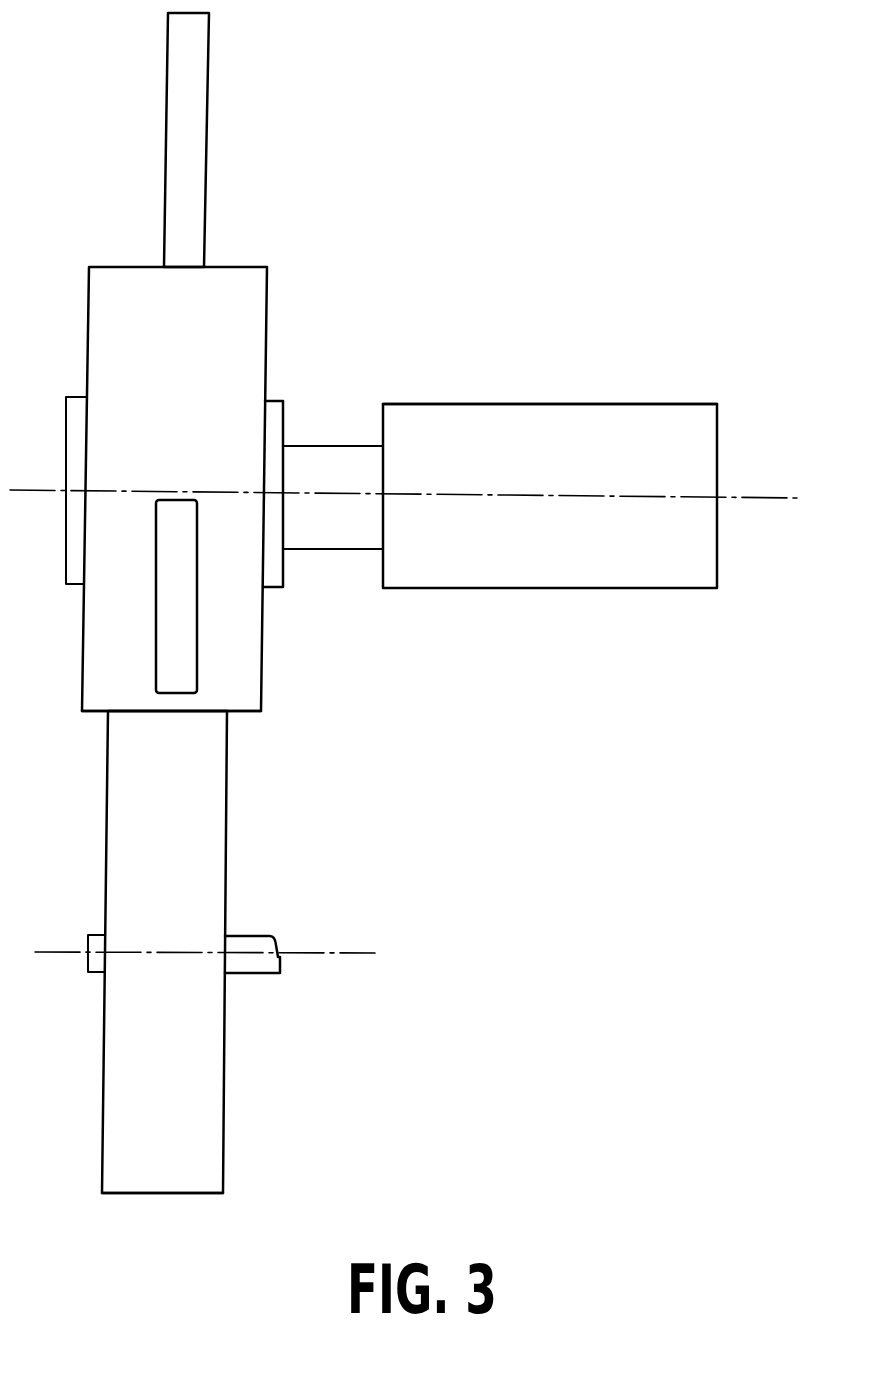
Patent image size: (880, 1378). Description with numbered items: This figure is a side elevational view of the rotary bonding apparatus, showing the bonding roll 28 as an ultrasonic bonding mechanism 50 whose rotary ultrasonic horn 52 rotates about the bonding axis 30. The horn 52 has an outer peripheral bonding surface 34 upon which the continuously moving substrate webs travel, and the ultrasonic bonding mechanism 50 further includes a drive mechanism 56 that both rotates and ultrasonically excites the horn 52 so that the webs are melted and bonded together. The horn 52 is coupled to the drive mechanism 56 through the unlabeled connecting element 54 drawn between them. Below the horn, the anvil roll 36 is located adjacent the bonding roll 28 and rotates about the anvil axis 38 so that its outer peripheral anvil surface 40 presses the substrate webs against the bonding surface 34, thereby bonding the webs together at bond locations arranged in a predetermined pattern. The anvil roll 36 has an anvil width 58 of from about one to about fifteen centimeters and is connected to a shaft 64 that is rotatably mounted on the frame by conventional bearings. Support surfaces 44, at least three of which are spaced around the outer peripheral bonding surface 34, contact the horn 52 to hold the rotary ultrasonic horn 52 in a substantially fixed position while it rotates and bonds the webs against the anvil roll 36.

The bonding roll 28 is at (243, 330).
The bonding axis 30 is at (750, 497).
The outer peripheral bonding surface 34 is at (250, 714).
The anvil roll 36 is at (195, 1142).
The anvil axis 38 is at (350, 950).
The anvil surface 40 is at (198, 1193).
The support surfaces 44 is at (192, 160).
The ultrasonic bonding mechanism 50 is at (580, 588).
The rotary ultrasonic horn 52 is at (210, 388).
The shaft 54 is at (335, 549).
The drive mechanism 56 is at (580, 404).
The anvil width 58 is at (209, 840).
The shaft 64 is at (257, 935).